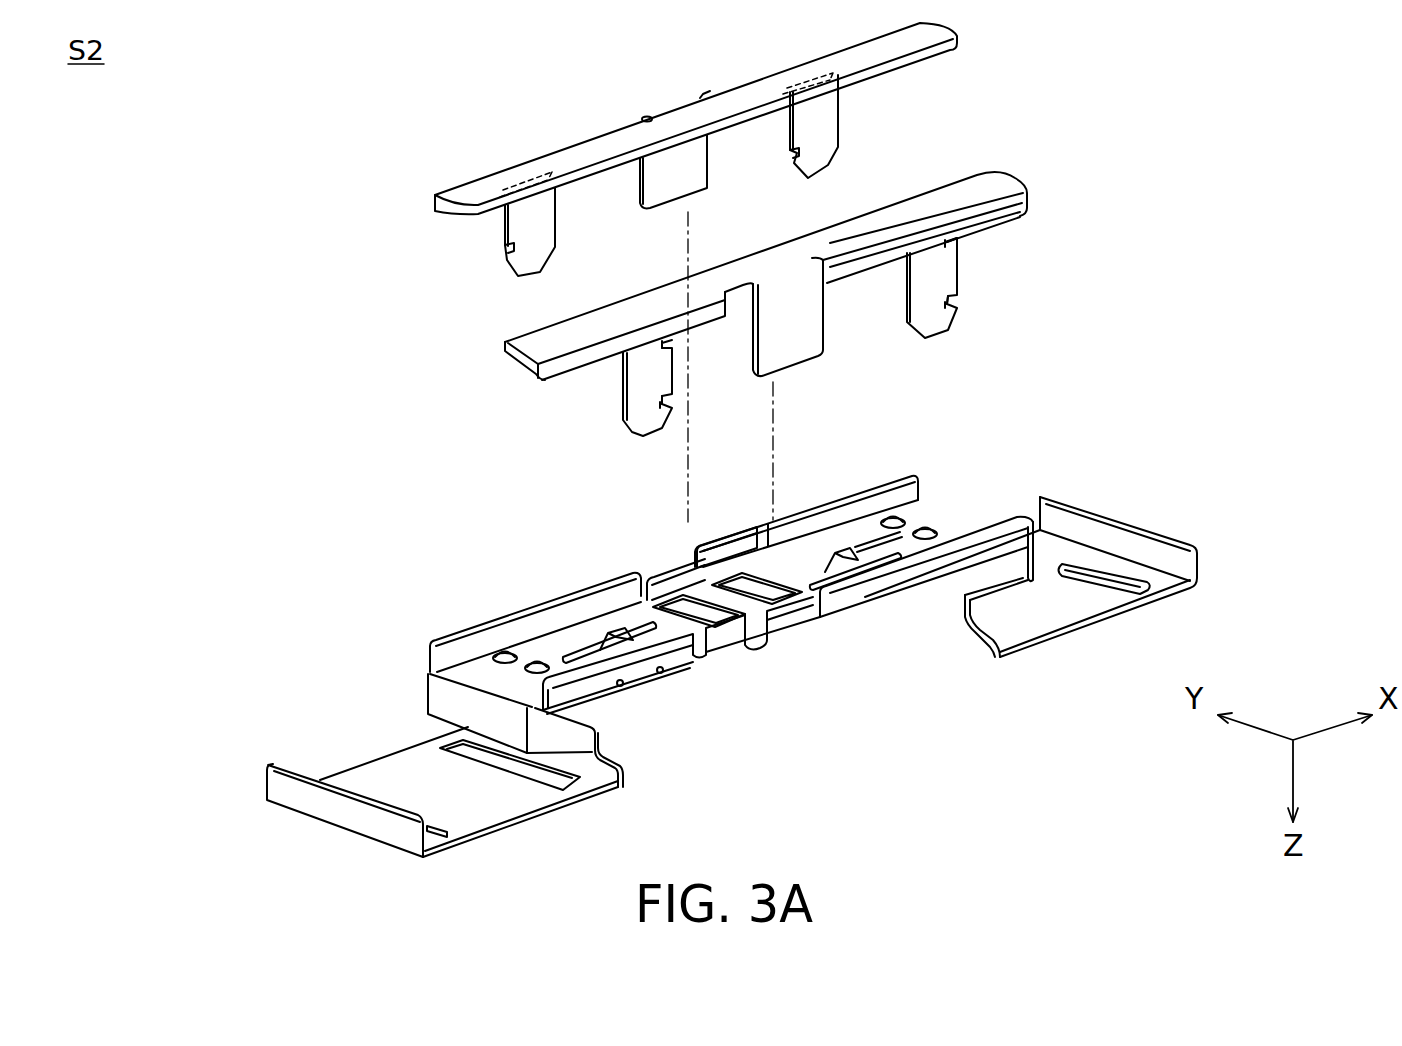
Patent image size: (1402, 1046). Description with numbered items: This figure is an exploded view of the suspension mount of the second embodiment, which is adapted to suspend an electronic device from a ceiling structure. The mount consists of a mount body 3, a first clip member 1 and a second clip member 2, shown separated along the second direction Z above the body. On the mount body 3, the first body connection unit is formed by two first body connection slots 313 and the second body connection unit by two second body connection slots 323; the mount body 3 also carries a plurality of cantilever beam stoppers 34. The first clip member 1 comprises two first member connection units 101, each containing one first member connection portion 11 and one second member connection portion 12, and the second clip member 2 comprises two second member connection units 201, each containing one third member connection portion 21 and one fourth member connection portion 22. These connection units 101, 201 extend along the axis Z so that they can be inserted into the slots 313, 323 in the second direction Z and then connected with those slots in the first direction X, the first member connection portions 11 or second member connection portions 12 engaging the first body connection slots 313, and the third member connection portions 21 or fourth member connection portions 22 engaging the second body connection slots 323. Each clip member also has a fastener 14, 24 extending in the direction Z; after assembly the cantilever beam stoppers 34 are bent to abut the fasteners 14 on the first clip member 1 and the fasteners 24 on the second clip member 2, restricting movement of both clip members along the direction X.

The first clip member 1 is at (997, 170).
The second clip member 2 is at (672, 98).
The mount body 3 is at (1125, 492).
The first member connection portion 11 is at (960, 305).
The second member connection portion 12 is at (955, 243).
The fastener 14 is at (812, 327).
The third member connection portion 21 is at (507, 264).
The fourth member connection portion 22 is at (505, 190).
The fastener 24 is at (700, 160).
The cantilever beam stopper 34 is at (770, 630).
The first member connection unit 101 is at (960, 280).
The second member connection unit 201 is at (503, 243).
The first body connection slot 313 is at (640, 690).
The second body connection slot 323 is at (530, 640).